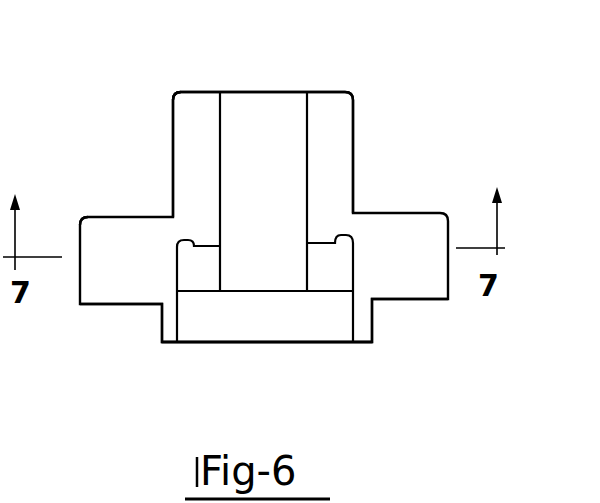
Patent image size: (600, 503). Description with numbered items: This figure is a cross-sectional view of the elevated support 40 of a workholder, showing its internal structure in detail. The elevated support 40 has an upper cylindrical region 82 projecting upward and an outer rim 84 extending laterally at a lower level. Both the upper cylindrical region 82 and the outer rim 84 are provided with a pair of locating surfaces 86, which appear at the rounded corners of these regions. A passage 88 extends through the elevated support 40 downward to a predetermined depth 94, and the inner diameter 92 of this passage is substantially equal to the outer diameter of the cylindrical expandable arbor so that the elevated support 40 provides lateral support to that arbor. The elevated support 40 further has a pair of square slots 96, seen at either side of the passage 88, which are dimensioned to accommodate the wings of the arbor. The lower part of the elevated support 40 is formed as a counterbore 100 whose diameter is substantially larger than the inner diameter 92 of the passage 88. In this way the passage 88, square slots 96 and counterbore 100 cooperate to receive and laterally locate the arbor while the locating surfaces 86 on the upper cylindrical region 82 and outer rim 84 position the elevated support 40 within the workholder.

The elevated support 40 is at (400, 190).
The upper cylindrical region 82 is at (186, 137).
The outer rim 84 is at (395, 277).
The locating surfaces 86 is at (205, 92).
The passage 88 is at (277, 105).
The inner diameter 92 is at (307, 210).
The predetermined depth 94 is at (309, 292).
The square slots 96 is at (190, 268).
The counterbore 100 is at (207, 330).